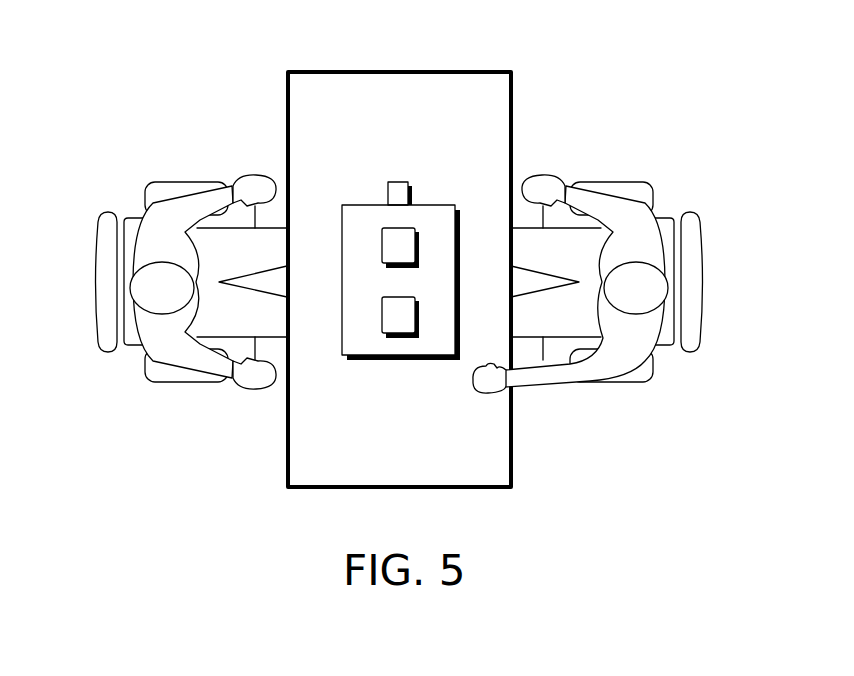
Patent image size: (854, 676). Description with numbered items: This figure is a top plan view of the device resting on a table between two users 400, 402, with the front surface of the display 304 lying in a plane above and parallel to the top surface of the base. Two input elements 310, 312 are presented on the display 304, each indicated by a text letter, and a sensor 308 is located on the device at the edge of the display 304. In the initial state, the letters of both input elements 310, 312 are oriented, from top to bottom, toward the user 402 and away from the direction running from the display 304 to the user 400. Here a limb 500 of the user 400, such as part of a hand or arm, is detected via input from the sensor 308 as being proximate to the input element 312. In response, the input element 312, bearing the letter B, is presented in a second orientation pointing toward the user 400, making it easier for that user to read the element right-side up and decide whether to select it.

The display 304 is at (400, 358).
The sensor 308 is at (399, 182).
The input element 310 is at (381, 243).
The input element 312 is at (381, 314).
The user 400 is at (668, 290).
The user 402 is at (128, 290).
The limb 500 is at (546, 388).